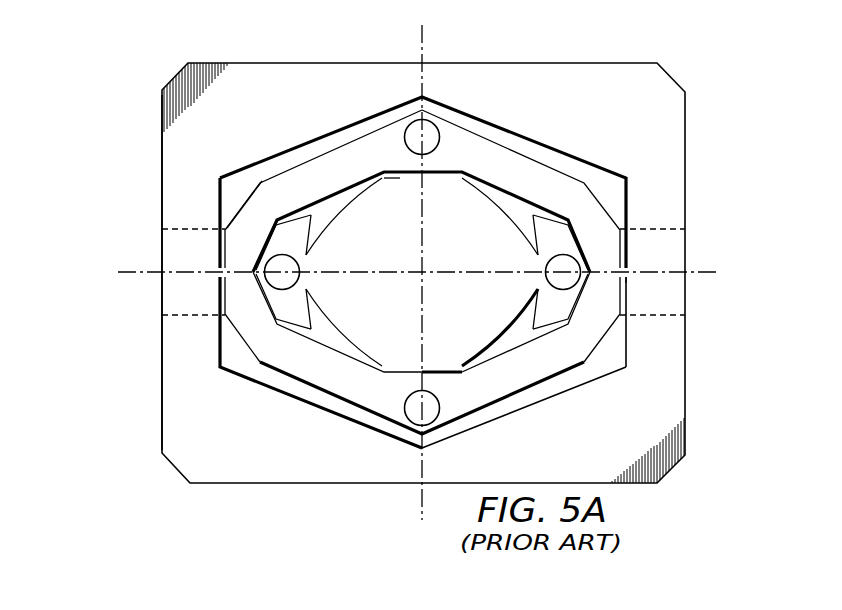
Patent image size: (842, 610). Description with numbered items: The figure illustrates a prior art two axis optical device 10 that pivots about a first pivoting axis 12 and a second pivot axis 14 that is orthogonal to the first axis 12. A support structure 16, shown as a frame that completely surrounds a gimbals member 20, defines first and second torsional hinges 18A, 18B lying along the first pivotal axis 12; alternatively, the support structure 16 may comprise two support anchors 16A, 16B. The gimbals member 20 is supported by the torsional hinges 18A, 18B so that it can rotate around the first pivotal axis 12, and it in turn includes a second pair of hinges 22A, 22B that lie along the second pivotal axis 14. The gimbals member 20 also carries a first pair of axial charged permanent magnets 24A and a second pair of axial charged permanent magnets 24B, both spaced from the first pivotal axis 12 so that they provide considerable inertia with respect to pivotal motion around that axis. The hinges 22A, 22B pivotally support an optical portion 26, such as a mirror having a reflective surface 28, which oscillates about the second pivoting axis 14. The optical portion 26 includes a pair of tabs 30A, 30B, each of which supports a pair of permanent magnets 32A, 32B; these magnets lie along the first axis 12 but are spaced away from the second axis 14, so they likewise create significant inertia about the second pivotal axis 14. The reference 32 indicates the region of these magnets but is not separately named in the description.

The two axis optical device 10 is at (104, 412).
The first pivoting axis 12 is at (704, 272).
The second pivot axis 14 is at (423, 35).
The support structure 16 is at (162, 160).
The support anchor 16A is at (168, 292).
The support anchor 16B is at (677, 292).
The first torsional hinge 18A is at (216, 277).
The second torsional hinge 18B is at (628, 277).
The gimbals member 20 is at (553, 168).
The torsional hinge 22A is at (417, 378).
The torsional hinge 22B is at (417, 170).
The axial charged permanent magnets 24A is at (443, 407).
The axial charged permanent magnets 24B is at (443, 140).
The optical portion 26 is at (403, 222).
The reflective surface 28 is at (485, 340).
The tab 30A is at (310, 312).
The tab 30B is at (534, 312).
The ramp notch 32 is at (260, 203).
The permanent magnets 32A is at (300, 267).
The permanent magnets 32B is at (544, 267).